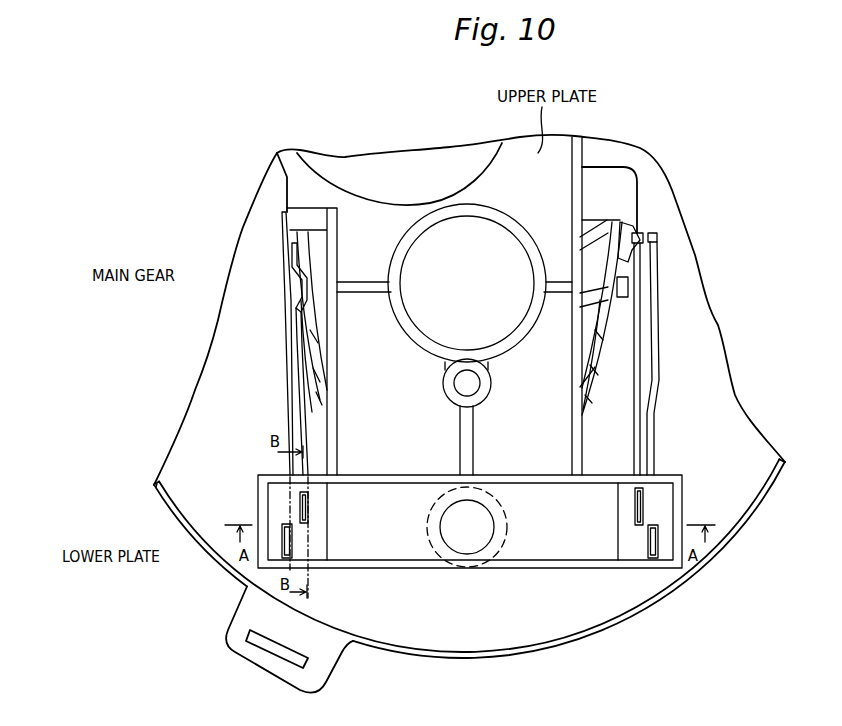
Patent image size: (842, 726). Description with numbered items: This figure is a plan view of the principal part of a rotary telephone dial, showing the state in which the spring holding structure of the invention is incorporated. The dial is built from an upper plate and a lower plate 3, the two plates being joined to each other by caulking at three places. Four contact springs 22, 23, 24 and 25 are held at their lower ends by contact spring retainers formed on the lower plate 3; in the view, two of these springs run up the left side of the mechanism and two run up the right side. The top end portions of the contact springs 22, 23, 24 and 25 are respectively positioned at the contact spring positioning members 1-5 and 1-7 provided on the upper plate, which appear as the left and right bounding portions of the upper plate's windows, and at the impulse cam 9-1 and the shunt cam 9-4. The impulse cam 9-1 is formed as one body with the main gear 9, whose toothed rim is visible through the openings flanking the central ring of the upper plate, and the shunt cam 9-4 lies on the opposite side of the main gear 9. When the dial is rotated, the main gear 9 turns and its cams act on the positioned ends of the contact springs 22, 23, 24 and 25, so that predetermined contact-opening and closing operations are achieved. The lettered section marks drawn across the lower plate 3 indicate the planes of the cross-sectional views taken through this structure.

The lower plate 3 is at (190, 512).
The contact spring positioning member 1-5 is at (297, 198).
The contact spring positioning member 1-7 is at (630, 181).
The main gear 9 is at (320, 293).
The impulse cam 9-1 is at (313, 255).
The shunt cam 9-4 is at (633, 238).
The contact spring 22 is at (300, 387).
The contact spring 23 is at (287, 340).
The contact spring 24 is at (653, 293).
The contact spring 25 is at (640, 373).